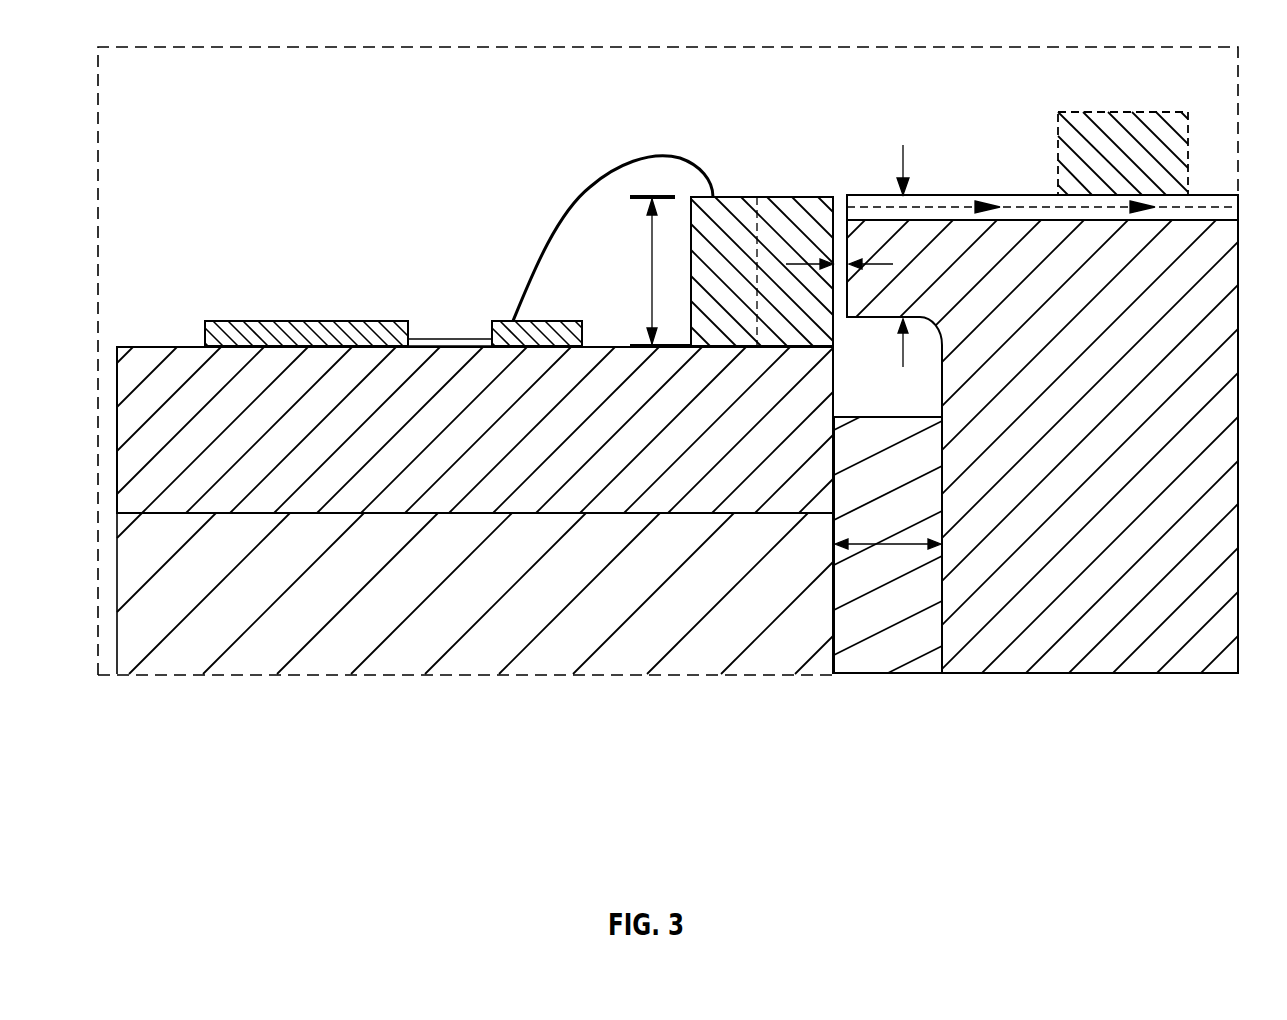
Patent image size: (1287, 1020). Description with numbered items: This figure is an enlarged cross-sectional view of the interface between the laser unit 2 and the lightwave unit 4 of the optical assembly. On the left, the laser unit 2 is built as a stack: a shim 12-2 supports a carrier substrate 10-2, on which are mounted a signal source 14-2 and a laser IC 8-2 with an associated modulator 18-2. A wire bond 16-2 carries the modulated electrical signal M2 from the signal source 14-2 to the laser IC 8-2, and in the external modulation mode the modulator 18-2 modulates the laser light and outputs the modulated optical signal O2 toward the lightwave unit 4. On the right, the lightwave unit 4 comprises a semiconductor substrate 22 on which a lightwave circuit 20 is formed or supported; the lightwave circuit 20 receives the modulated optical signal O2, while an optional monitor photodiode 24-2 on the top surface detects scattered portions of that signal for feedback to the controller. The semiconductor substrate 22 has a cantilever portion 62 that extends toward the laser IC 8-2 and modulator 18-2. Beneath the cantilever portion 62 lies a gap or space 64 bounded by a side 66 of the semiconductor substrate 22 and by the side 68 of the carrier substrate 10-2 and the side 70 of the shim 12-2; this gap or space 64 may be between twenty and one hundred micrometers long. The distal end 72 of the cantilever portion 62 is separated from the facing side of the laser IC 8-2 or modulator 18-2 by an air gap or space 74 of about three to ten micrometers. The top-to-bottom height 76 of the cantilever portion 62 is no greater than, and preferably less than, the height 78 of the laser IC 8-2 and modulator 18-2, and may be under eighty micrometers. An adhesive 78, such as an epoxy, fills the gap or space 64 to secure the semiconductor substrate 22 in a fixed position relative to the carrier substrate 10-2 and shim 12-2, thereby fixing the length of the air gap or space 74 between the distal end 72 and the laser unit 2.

The laser unit 2 is at (102, 683).
The lightwave unit 4 is at (833, 683).
The laser IC 8-2 is at (738, 197).
The carrier substrate 10-2 is at (130, 400).
The shim 12-2 is at (128, 570).
The signal source 14-2 is at (605, 313).
The wire bond 16-2 is at (627, 160).
The modulator 18-2 is at (780, 243).
The lightwave circuit 20 is at (972, 195).
The semiconductor substrate 22 is at (1210, 515).
The monitor photodiode 24-2 is at (1085, 112).
The cantilever portion 62 is at (907, 287).
The gap or space 64 is at (906, 546).
The side of semiconductor substrate 66 is at (940, 648).
The side of carrier substrate 68 is at (833, 387).
The side of shim 70 is at (843, 650).
The distal end 72 is at (847, 317).
The air gap or space 74 is at (877, 267).
The height of cantilever portion 76 is at (900, 163).
The height; adhesive 78 is at (652, 277).
The modulated electrical signal M2 is at (540, 235).
The modulated optical signal O2 is at (932, 207).